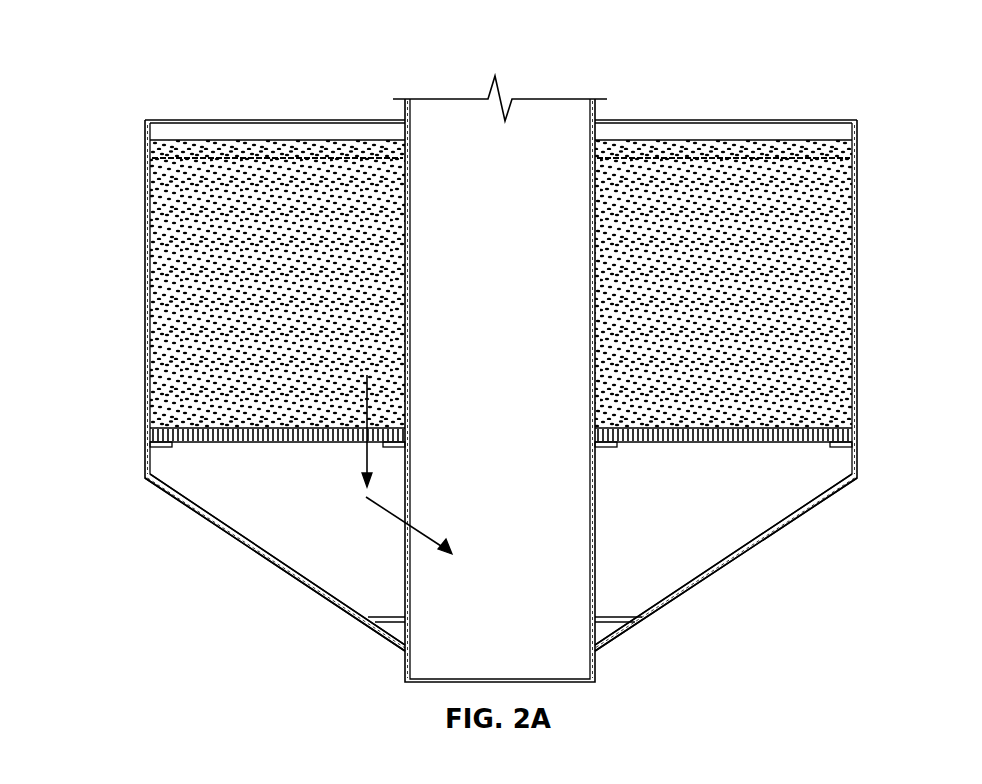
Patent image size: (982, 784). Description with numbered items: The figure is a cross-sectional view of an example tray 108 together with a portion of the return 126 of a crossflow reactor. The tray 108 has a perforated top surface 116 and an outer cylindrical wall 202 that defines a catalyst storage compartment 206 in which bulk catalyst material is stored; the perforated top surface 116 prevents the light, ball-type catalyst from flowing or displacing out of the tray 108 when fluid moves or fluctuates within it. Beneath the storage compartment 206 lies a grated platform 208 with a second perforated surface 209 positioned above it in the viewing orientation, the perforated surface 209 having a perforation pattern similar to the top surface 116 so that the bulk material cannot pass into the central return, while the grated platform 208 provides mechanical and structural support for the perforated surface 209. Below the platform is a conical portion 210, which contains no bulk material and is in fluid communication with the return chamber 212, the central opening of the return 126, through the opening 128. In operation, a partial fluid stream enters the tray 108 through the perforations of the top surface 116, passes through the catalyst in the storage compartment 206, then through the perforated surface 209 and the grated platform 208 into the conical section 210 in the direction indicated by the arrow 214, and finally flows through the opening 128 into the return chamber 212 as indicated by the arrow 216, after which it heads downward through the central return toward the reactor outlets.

The tray 108 is at (148, 40).
The top surface 116 is at (228, 140).
The return 126 is at (408, 242).
The opening 128 is at (405, 578).
The outer cylindrical wall 202 is at (146, 325).
The catalyst storage compartment 206 is at (283, 314).
The grated platform 208 is at (155, 432).
The perforated surface 209 is at (272, 440).
The conical portion 210 is at (232, 536).
The return chamber 212 is at (523, 364).
The arrow 214 is at (408, 405).
The arrow 216 is at (412, 530).